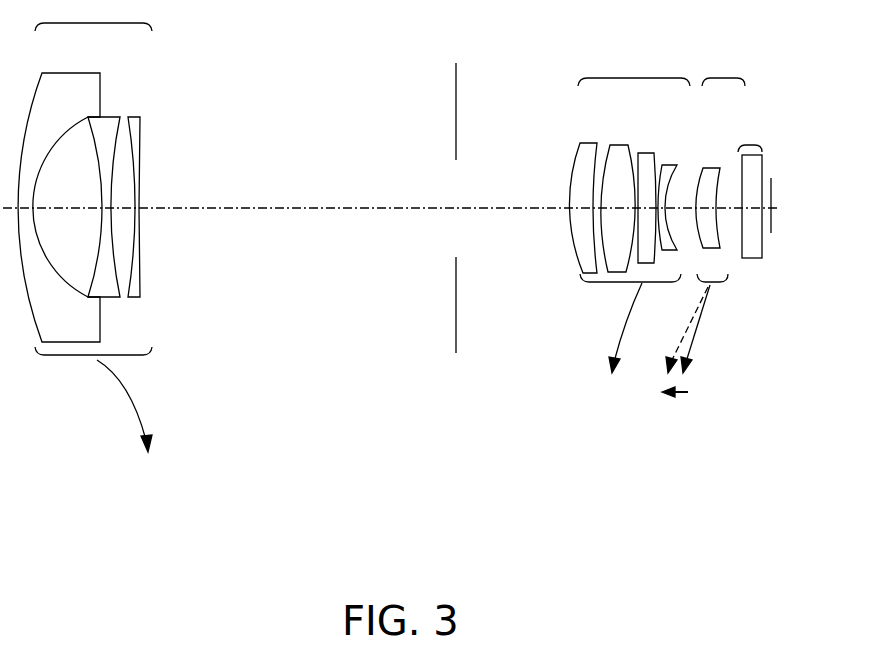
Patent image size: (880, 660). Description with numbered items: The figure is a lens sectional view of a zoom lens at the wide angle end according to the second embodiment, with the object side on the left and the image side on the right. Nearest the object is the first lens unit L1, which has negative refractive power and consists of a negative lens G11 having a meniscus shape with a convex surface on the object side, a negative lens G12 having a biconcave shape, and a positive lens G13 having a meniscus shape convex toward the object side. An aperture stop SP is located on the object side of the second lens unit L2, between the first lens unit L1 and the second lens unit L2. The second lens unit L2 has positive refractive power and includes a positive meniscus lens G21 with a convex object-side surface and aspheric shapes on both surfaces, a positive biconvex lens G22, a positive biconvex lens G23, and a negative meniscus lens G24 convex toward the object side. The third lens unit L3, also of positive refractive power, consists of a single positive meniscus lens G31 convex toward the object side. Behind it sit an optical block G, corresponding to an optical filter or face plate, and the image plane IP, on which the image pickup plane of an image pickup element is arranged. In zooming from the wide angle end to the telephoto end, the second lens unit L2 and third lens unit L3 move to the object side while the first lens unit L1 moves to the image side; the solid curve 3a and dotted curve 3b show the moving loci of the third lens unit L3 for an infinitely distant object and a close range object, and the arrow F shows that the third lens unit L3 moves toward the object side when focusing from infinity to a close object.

The first lens unit L1 is at (93, 228).
The negative lens G11 is at (70, 83).
The negative lens G12 is at (104, 120).
The positive lens G13 is at (133, 130).
The aperture stop SP is at (456, 63).
The second lens unit L2 is at (634, 217).
The positive lens G21 is at (574, 178).
The positive lens G22 is at (618, 163).
The positive lens G23 is at (645, 170).
The negative lens G24 is at (672, 172).
The third lens unit L3 is at (721, 172).
The positive lens G31 is at (711, 172).
The optical block G is at (750, 192).
The image plane IP is at (773, 176).
The curve (solid line) 3a is at (699, 329).
The curve (dotted line) 3b is at (679, 330).
The arrow F is at (676, 401).